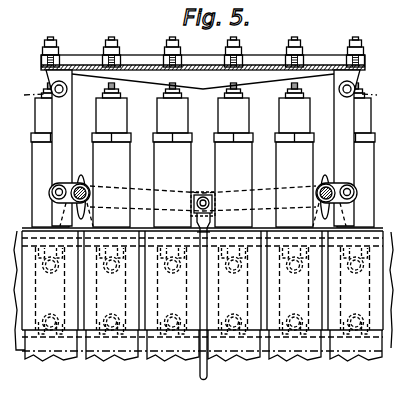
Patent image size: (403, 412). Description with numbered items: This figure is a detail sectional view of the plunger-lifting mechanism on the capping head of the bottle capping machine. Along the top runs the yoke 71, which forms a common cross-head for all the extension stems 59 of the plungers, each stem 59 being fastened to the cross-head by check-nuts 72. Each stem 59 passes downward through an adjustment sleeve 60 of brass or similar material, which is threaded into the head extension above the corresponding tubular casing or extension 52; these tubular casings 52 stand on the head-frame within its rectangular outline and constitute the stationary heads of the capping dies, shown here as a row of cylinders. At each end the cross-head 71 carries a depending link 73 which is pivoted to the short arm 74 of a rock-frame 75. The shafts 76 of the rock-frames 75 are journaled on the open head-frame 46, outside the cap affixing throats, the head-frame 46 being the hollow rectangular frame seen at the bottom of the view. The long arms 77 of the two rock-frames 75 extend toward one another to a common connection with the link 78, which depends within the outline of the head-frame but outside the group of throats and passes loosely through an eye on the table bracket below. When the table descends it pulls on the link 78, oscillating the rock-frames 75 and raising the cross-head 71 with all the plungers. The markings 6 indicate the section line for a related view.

The yoke 71 is at (267, 54).
The extension stem 59 is at (164, 40).
The check-nuts 72 is at (182, 43).
The adjustment sleeve 60 is at (157, 99).
The tubular casing or extension 52 is at (203, 162).
The depending link 73 is at (60, 133).
The section line 6- 6 is at (200, 92).
The short arm 74 is at (348, 206).
The rock-frame 75 is at (63, 205).
The shaft 76 is at (87, 191).
The long arm 77 is at (137, 197).
The hollow rectangular or open frame 46 is at (134, 355).
The link 78 is at (206, 379).